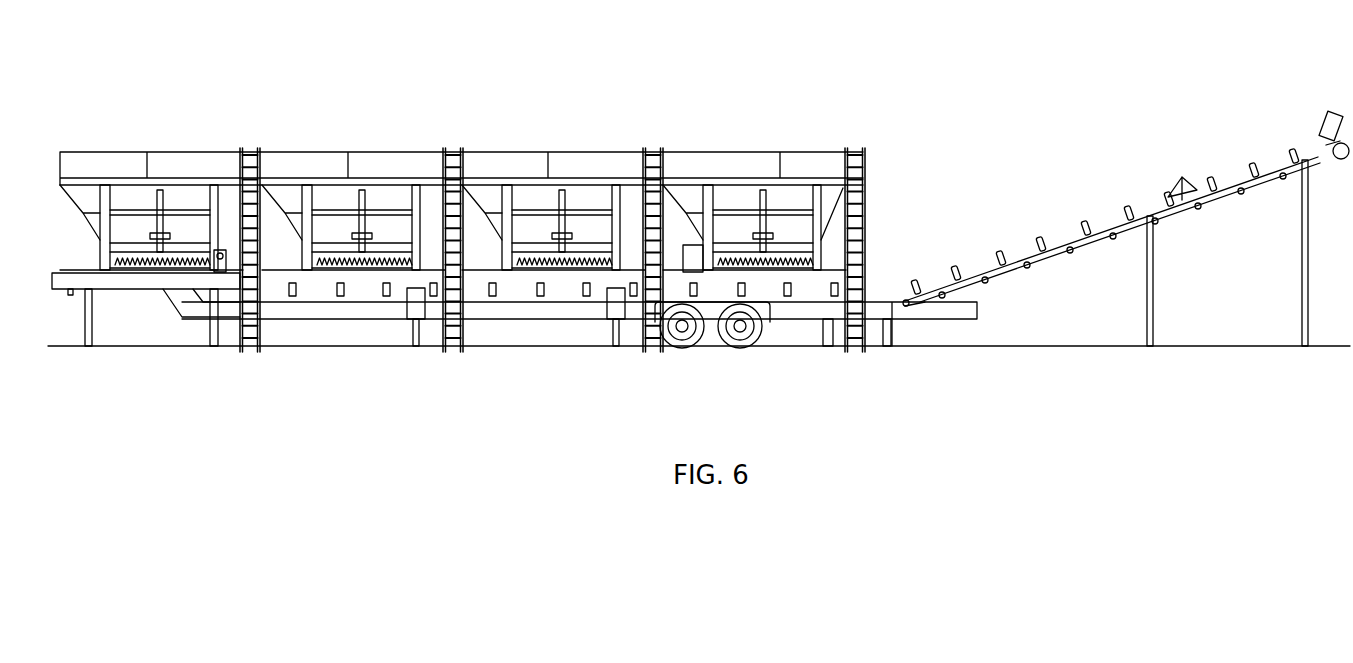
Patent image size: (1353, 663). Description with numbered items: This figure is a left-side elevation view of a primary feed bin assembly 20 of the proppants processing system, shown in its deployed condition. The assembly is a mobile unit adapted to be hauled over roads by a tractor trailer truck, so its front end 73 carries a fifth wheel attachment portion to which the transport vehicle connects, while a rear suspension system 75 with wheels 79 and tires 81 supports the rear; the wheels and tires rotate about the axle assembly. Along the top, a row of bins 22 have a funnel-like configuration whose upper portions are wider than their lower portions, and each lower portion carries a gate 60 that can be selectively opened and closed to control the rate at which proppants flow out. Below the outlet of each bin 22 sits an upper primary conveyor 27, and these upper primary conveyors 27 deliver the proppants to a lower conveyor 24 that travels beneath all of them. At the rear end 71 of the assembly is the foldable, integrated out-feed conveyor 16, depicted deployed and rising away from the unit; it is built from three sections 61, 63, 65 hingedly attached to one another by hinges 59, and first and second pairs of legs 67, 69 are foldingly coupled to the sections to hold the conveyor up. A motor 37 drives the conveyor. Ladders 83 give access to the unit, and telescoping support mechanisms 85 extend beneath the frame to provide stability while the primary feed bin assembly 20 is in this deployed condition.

The out-feed conveyor 16 is at (1095, 152).
The primary feed bin assembly 20 is at (172, 86).
The bin 22 is at (580, 152).
The lower conveyor 24 is at (540, 302).
The upper primary conveyor 27 is at (158, 332).
The motor 37 is at (210, 270).
The hinge 59 is at (1040, 265).
The gate 60 is at (265, 370).
The first section 61 is at (948, 278).
The second section 63 is at (1125, 240).
The third section 65 is at (1238, 178).
The first pair of legs 67 is at (1145, 297).
The second pair of legs 69 is at (1300, 235).
The rear end 71 is at (905, 244).
The front end 73 is at (68, 312).
The rear suspension system 75 is at (784, 338).
The wheel 79 is at (664, 350).
The tire 81 is at (690, 328).
The ladder 83 is at (222, 268).
The support mechanism 85 is at (410, 328).